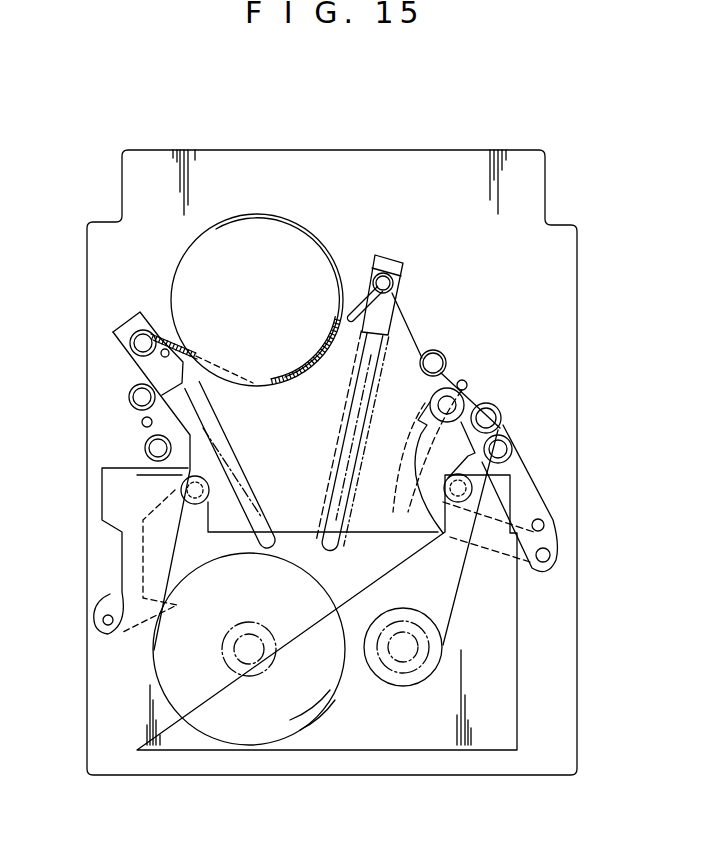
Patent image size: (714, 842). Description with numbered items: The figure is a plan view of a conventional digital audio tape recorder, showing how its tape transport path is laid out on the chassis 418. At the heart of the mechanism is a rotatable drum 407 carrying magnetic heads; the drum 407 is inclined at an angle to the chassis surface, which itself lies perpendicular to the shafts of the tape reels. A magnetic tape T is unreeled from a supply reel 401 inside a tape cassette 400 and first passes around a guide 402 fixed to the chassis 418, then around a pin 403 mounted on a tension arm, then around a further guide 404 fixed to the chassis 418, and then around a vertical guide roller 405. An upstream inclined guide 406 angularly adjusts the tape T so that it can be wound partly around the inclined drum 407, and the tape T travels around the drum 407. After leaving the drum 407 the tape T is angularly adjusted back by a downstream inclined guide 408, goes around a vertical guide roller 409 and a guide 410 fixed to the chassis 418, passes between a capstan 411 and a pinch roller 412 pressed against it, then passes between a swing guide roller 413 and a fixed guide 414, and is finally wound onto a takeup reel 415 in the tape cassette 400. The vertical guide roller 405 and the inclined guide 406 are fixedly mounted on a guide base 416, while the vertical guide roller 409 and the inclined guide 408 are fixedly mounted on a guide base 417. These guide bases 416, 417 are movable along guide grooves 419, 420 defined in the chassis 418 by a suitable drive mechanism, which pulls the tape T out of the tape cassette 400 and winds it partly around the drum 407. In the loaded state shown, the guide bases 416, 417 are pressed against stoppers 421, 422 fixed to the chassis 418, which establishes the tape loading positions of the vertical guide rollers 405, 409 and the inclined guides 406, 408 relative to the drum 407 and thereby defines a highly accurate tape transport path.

The tape cassette 400 is at (363, 735).
The supply reel 401 is at (250, 668).
The guide 402 is at (150, 448).
The pin 403 is at (142, 423).
The guide 404 is at (136, 397).
The vertical guide roller 405 is at (137, 342).
The upstream inclined guide 406 is at (140, 354).
The rotatable drum 407 is at (258, 232).
The downstream inclined guide 408 is at (357, 300).
The vertical guide roller 409 is at (383, 270).
The guide 410 is at (440, 352).
The capstan 411 is at (466, 382).
The pinch roller 412 is at (464, 402).
The swing guide roller 413 is at (502, 419).
The fixed guide 414 is at (514, 447).
The takeup reel 415 is at (423, 660).
The guide base 416 is at (160, 368).
The guide base 417 is at (398, 306).
The chassis 418 is at (138, 158).
The guide groove 419 is at (219, 456).
The guide groove 420 is at (347, 472).
The stopper 421 is at (130, 326).
The stopper 422 is at (400, 265).
The magnetic tape T is at (150, 556).